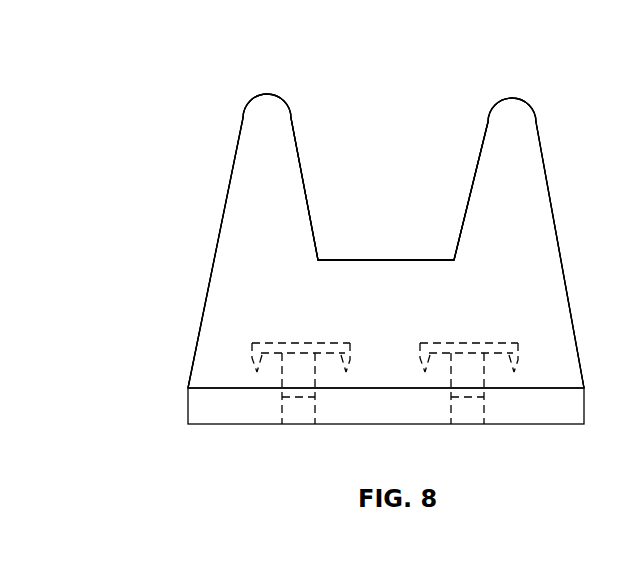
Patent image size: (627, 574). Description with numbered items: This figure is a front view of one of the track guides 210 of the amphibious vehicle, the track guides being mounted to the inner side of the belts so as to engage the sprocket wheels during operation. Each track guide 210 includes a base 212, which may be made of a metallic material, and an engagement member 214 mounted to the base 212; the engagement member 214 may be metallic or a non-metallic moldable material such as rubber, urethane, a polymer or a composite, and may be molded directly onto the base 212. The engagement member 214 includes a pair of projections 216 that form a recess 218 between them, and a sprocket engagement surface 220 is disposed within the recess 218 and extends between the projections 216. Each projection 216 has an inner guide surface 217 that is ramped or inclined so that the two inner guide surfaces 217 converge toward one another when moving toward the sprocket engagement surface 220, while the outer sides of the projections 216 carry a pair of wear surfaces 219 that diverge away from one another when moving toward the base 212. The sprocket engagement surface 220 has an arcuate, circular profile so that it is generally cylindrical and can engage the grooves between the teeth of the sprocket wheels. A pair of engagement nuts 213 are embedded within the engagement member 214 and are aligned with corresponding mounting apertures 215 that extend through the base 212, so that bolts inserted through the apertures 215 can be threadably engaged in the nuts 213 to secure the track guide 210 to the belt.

The track guide 210 is at (183, 107).
The base 212 is at (175, 394).
The engagement nuts 213 is at (295, 343).
The engagement member 214 is at (201, 252).
The mounting apertures 215 is at (282, 410).
The projections 216 is at (274, 82).
The inner guide surface 217 is at (304, 178).
The recess 218 is at (392, 110).
The wear surfaces 219 is at (233, 168).
The sprocket engagement surface 220 is at (357, 259).